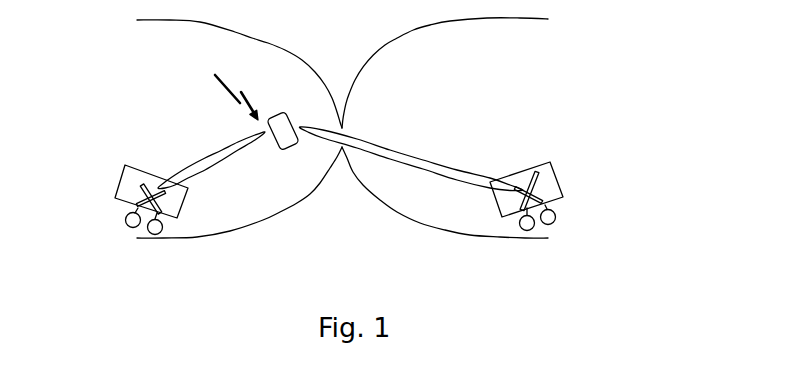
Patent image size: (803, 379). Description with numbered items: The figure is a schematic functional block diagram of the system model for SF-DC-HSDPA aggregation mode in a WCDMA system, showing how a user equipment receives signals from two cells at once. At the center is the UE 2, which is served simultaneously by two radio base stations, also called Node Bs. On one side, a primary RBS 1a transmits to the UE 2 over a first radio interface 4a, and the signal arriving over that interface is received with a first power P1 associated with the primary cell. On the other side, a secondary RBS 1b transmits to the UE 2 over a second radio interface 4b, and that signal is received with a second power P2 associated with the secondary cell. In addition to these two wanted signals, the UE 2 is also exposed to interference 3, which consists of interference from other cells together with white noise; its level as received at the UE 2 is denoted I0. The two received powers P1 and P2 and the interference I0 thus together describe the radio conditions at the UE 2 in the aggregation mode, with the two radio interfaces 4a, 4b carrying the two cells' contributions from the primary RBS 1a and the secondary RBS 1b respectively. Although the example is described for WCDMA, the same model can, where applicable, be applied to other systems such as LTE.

The primary RBS 1a is at (122, 187).
The secondary RBS 1b is at (557, 178).
The UE 2 is at (283, 152).
The interference 3 is at (245, 100).
The first radio interface 4a is at (206, 158).
The second radio interface 4b is at (456, 166).
The first power P1 is at (252, 172).
The second power P2 is at (314, 108).
The interference power I0 is at (310, 158).